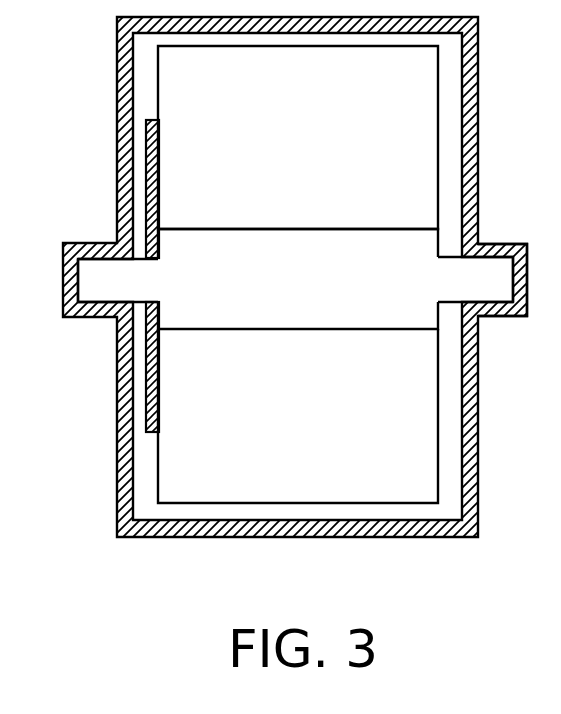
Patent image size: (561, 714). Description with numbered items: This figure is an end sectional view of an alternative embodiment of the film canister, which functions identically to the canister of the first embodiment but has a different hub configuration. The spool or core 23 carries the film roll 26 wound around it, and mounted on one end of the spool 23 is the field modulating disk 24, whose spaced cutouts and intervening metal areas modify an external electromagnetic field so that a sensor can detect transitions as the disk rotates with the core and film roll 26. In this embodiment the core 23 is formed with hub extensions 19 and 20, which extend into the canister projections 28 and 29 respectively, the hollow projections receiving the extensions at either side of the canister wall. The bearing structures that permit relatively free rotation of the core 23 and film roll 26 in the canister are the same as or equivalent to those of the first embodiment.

The hub extension 19 is at (103, 288).
The hub extension 20 is at (490, 287).
The spool 23 is at (307, 291).
The field modulating disk 24 is at (150, 222).
The film roll 26 is at (308, 159).
The canister projection 28 is at (88, 243).
The canister projection 29 is at (502, 248).